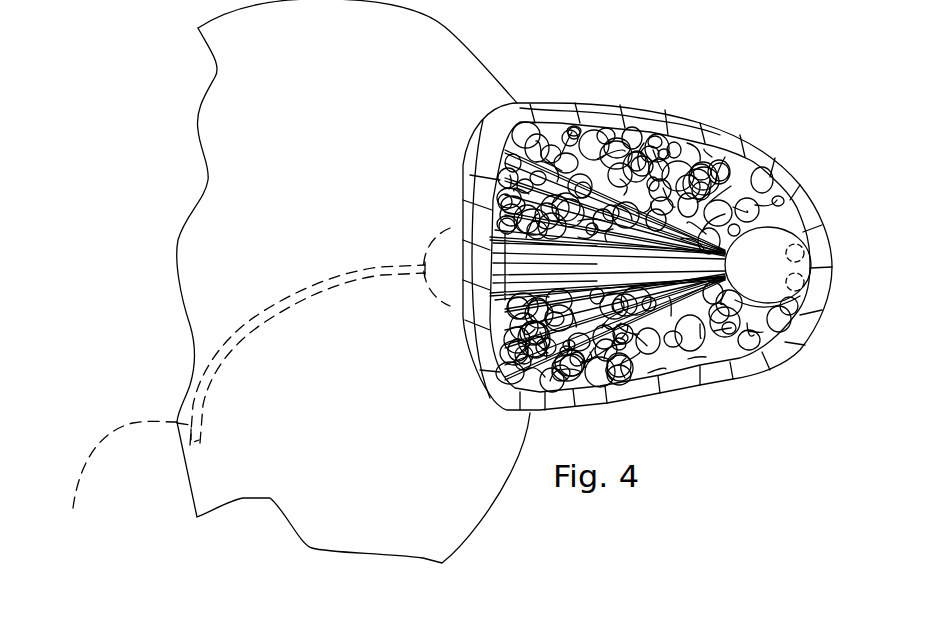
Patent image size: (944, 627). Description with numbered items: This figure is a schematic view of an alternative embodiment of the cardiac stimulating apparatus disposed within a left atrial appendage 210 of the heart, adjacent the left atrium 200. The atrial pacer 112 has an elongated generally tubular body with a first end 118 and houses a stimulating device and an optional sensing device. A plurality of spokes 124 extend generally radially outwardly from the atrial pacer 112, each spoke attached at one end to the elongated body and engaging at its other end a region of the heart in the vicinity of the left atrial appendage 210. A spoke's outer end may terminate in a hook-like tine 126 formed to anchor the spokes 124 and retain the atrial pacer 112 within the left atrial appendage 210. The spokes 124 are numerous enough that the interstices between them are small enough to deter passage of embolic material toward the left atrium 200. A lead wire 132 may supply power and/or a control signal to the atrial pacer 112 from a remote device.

The left atrium 200 is at (344, 446).
The lead wire 132 is at (251, 382).
The left atrial appendage 210 is at (640, 120).
The first end 118 is at (763, 227).
The atrial pacer 112 is at (760, 310).
The spokes 124 is at (520, 160).
The hook-like tine 126 is at (476, 222).